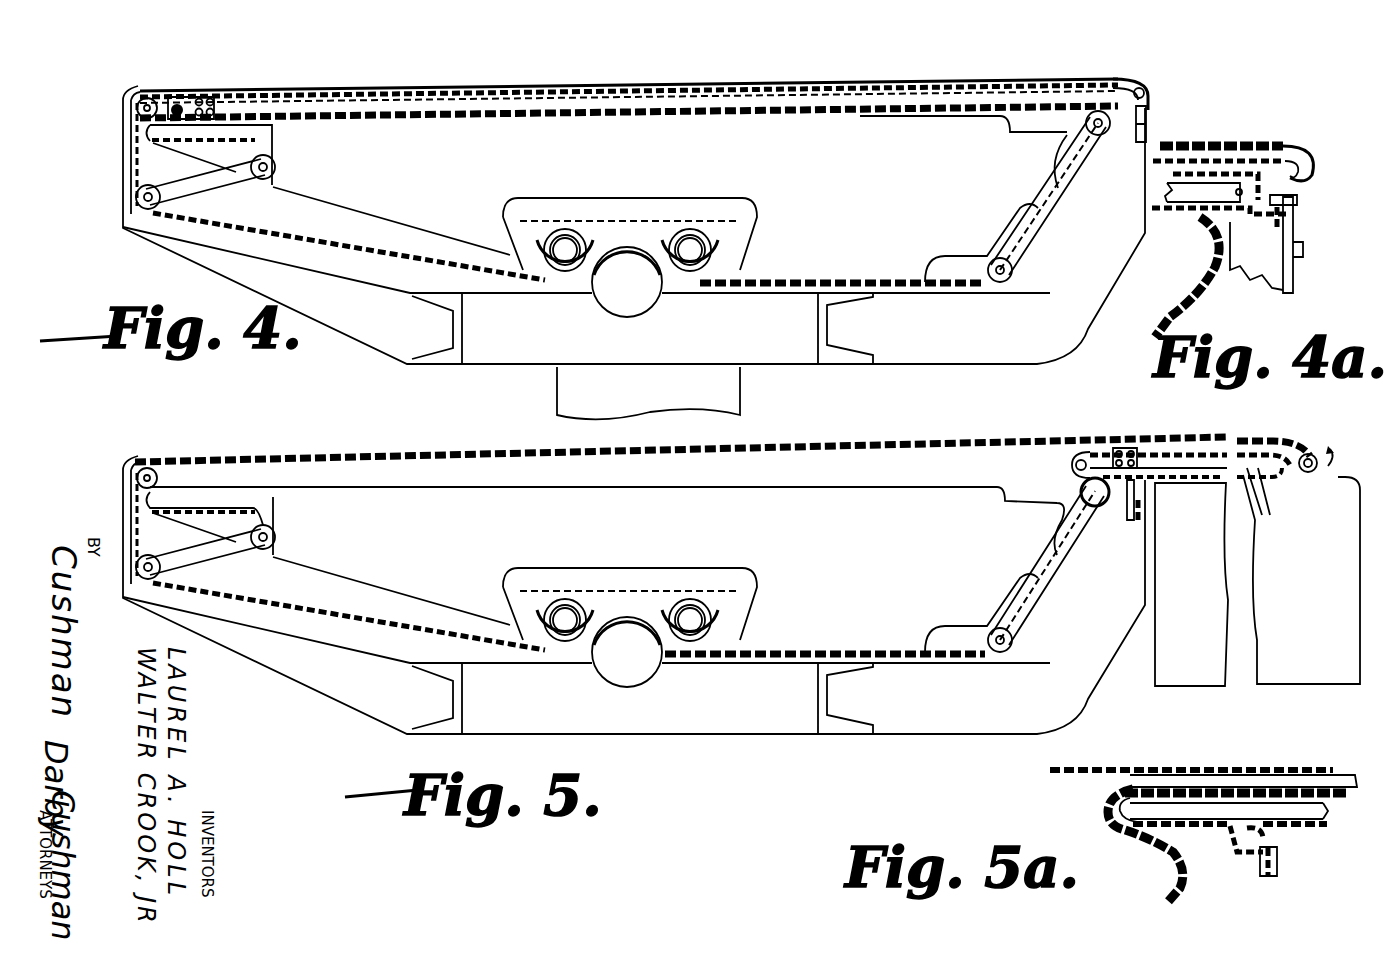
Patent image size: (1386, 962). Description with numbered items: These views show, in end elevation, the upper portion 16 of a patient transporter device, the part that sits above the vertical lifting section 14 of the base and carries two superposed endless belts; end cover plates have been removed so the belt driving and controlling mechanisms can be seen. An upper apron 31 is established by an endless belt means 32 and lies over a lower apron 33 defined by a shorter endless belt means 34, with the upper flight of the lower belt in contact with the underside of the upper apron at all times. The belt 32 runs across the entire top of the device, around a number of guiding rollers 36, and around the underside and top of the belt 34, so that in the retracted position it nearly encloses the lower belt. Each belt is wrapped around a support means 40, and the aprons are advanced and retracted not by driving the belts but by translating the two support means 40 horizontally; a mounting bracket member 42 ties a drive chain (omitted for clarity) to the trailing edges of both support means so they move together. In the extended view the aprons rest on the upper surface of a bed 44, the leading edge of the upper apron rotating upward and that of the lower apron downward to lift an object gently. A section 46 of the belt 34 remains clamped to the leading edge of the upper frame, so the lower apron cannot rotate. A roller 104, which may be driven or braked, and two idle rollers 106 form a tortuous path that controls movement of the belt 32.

In FIG. 4, the vertical lifting section 14 is at (728, 397).
In FIG. 4, the upper portion 16 is at (1025, 343).
In FIG. 5, the upper portion 16 is at (950, 722).
In FIG. 4, the upper apron 31 is at (908, 82).
In FIG. 5, the upper apron 31 is at (1262, 438).
In FIG. 4, the endless belt means 32 is at (1112, 77).
In FIG. 4A, the endless belt means 32 is at (1288, 140).
In FIG. 5A, the endless belt means 32 is at (1184, 764).
In FIG. 4, the lower apron 33 is at (860, 104).
In FIG. 5, the lower apron 33 is at (1297, 470).
In FIG. 4, the endless belt means 34 is at (937, 112).
In FIG. 4A, the endless belt means 34 is at (1225, 223).
In FIG. 5, the endless belt means 34 is at (1181, 486).
In FIG. 5A, the endless belt means 34 is at (1297, 840).
In FIG. 4, the guiding rollers 36 is at (160, 97).
In FIG. 4, the support means 40 is at (690, 99).
In FIG. 4A, the support means 40 is at (1221, 158).
In FIG. 5, the support means 40 is at (1150, 445).
In FIG. 5A, the support means 40 is at (1238, 775).
In FIG. 4, the mounting bracket member 42 is at (214, 98).
In FIG. 5, the mounting bracket member 42 is at (1126, 447).
In FIG. 5, the bed 44 is at (1325, 595).
In FIG. 4, the belt section 46 is at (1147, 112).
In FIG. 4A, the belt section 46 is at (1294, 211).
In FIG. 5, the belt section 46 is at (1128, 513).
In FIG. 5A, the belt section 46 is at (1257, 868).
In FIG. 4, the roller 104 is at (630, 309).
In FIG. 5, the roller 104 is at (627, 688).
In FIG. 4, the idle rollers 106 is at (658, 240).
In FIG. 5, the idle rollers 106 is at (658, 610).